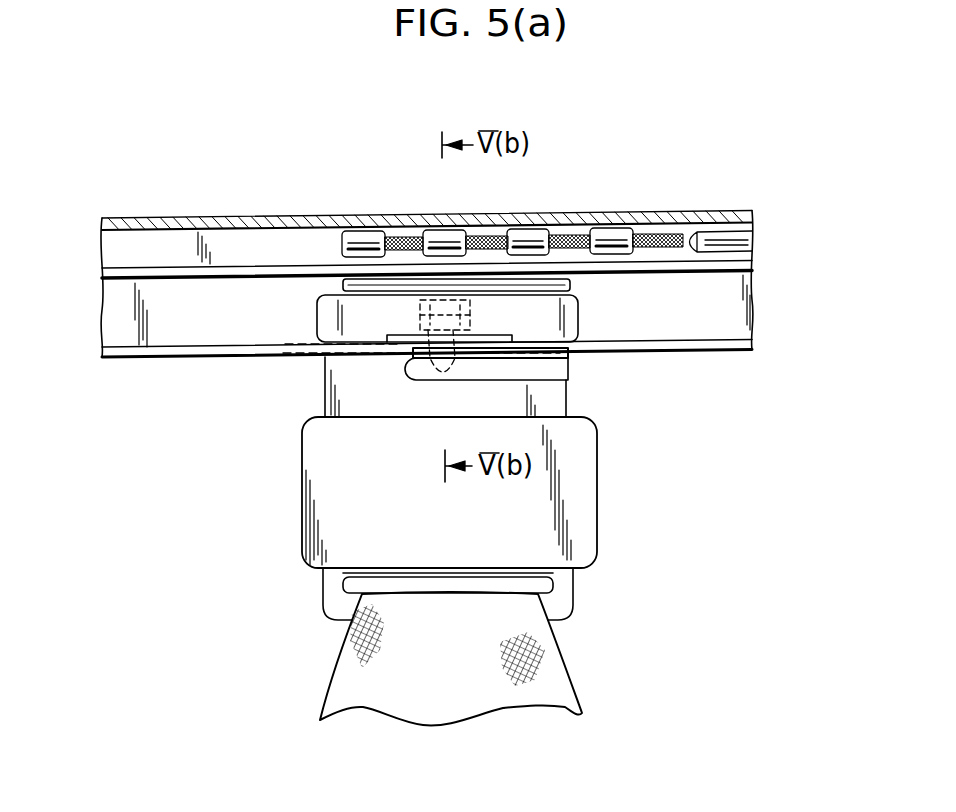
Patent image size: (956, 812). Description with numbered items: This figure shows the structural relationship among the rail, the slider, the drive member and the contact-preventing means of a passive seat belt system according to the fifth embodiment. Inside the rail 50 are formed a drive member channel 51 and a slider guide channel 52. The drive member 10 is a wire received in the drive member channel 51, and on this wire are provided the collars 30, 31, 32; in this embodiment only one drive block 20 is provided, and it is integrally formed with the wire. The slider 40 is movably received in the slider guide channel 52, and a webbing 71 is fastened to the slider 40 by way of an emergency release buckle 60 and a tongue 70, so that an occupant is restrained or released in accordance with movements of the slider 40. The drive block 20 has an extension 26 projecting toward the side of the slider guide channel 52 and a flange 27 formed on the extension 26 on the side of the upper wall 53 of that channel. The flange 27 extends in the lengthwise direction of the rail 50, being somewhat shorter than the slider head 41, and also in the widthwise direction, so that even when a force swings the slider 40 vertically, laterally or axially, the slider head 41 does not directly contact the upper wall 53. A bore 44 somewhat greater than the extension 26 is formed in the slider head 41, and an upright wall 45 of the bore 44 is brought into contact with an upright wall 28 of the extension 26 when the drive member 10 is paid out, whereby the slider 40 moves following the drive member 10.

The drive member 10 is at (656, 226).
The drive block 20 is at (446, 300).
The extension 26 is at (500, 213).
The flange 27 is at (343, 283).
The upright wall 28 is at (445, 374).
The collar 30 is at (369, 236).
The collar 31 is at (548, 247).
The collar 32 is at (632, 244).
The slider 40 is at (550, 395).
The slider head 41 is at (323, 323).
The bore 44 is at (415, 336).
The upright wall 45 is at (416, 305).
The rail 50 is at (663, 322).
The drive member channel 51 is at (119, 252).
The slider guide channel 52 is at (121, 333).
The upper wall 53 is at (213, 274).
The emergency release buckle 60 is at (582, 495).
The tongue 70 is at (563, 590).
The webbing 71 is at (565, 678).